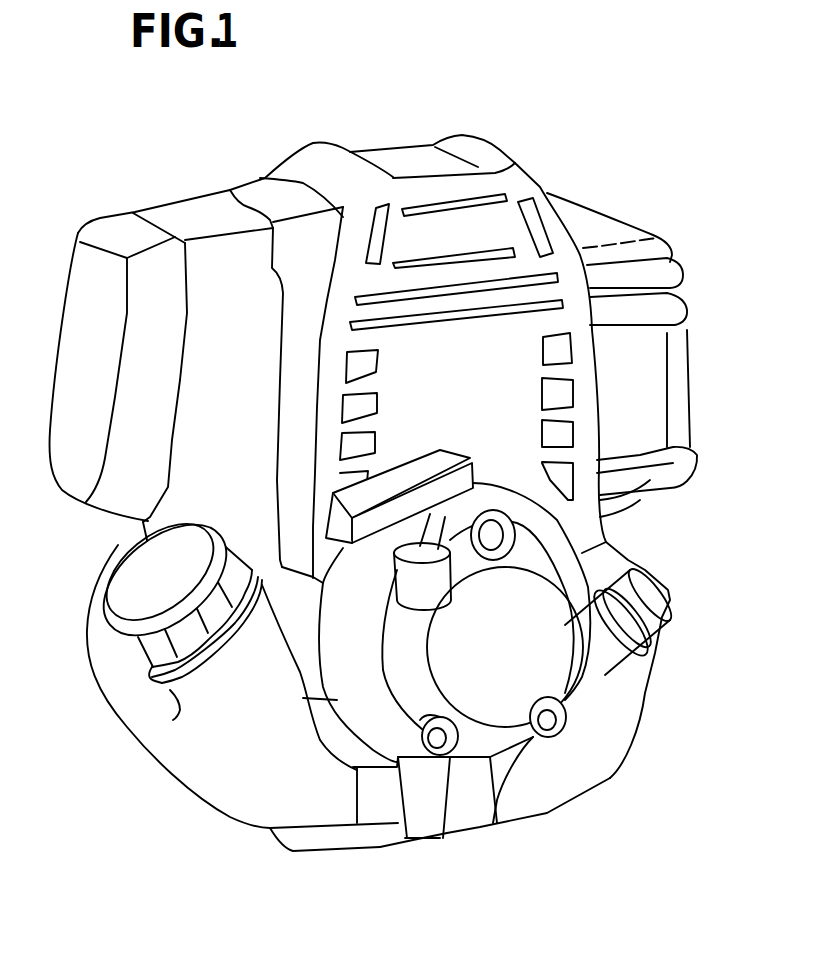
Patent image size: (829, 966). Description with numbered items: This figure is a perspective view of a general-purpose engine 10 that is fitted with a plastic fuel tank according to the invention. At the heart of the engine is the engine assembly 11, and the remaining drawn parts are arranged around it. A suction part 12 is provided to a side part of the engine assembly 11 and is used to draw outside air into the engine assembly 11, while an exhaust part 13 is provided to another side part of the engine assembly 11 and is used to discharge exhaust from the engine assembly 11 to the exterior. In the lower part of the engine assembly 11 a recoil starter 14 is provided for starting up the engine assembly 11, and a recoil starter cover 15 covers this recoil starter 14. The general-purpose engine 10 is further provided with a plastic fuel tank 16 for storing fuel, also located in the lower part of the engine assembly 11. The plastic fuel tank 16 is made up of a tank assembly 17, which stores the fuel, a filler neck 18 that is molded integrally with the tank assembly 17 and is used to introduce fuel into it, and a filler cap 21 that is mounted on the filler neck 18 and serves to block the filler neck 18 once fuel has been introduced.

The general-purpose engine 10 is at (612, 95).
The engine assembly 11 is at (384, 148).
The suction part 12 is at (108, 218).
The exhaust part 13 is at (650, 227).
The recoil starter 14 is at (460, 450).
The recoil starter cover 15 is at (370, 733).
The plastic fuel tank 16 is at (232, 816).
The tank assembly 17 is at (585, 800).
The filler neck 18 is at (178, 688).
The filler cap 21 is at (132, 537).